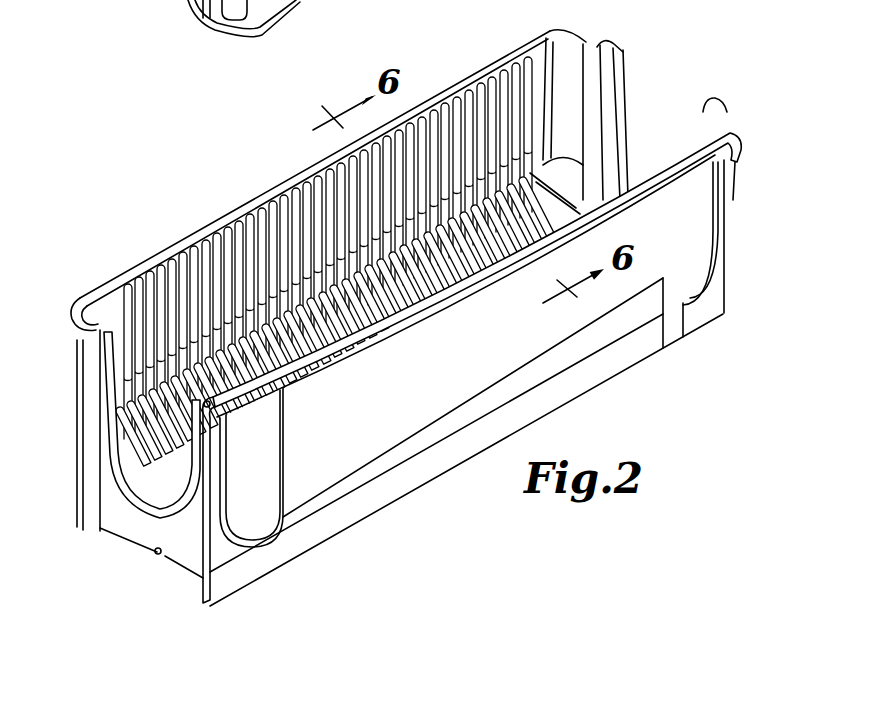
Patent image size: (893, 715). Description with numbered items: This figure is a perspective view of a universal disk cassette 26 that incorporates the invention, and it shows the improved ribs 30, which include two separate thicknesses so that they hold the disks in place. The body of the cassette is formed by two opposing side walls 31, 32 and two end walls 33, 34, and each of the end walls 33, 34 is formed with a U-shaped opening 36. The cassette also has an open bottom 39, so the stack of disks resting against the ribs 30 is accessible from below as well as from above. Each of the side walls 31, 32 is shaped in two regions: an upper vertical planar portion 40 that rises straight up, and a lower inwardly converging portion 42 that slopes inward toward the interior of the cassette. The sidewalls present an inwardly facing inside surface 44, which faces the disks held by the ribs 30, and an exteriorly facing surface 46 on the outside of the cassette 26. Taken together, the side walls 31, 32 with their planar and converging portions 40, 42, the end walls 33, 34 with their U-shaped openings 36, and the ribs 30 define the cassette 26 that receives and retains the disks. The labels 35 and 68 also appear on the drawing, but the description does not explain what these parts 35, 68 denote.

The universal disk cassette 26 is at (727, 113).
The ribs 30 is at (283, 194).
The side wall 31 is at (201, 231).
The side wall 32 is at (344, 432).
The end wall 33 is at (137, 520).
The end wall 34 is at (622, 90).
The post cap 35 is at (570, 63).
The U-shaped opening 36 is at (128, 481).
The open bottom 39 is at (185, 578).
The upper vertical planar portion 40 is at (690, 199).
The lower inwardly converging portion 42 is at (303, 503).
The inwardly facing inside surface 44 is at (542, 80).
The exteriorly facing surface 46 is at (697, 242).
The end pin 68 is at (127, 281).